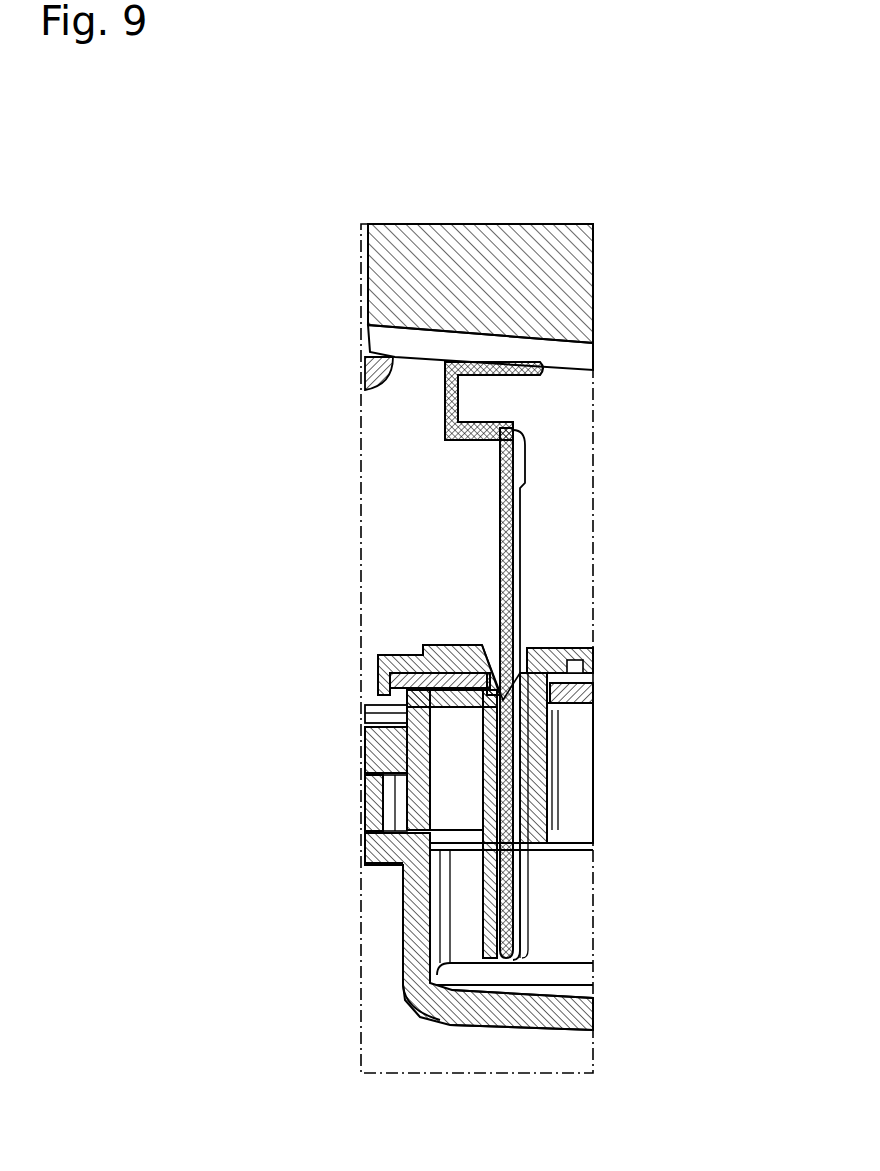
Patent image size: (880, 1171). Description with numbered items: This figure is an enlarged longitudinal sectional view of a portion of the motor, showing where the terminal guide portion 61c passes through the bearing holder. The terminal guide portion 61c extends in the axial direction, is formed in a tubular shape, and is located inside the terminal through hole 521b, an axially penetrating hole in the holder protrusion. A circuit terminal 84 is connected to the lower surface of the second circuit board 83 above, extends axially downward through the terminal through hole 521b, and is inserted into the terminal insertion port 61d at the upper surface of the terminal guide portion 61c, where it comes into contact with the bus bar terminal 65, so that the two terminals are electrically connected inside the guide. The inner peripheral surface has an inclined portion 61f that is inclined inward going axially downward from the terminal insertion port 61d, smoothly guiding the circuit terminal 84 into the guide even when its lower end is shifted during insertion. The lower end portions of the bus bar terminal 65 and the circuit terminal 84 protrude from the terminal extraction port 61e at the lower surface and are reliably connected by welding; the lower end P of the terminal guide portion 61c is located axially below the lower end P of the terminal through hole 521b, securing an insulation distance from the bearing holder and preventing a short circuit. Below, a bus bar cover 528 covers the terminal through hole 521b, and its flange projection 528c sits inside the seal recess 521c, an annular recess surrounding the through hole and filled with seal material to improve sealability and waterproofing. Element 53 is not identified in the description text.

The housing block 53 is at (400, 287).
The second circuit board 83 is at (490, 325).
The circuit terminal 84 is at (522, 917).
The terminal insertion port 61d is at (480, 640).
The inclined portion 61f is at (497, 665).
The terminal through hole 521b is at (378, 692).
The seal recess 521c is at (365, 770).
The flange projection 528c is at (470, 773).
The terminal guide portion 61c is at (372, 800).
The lower end P is at (375, 848).
The terminal extraction port 61e is at (407, 880).
The bus bar terminal 65 is at (430, 1017).
The bus bar cover 528 is at (548, 1027).